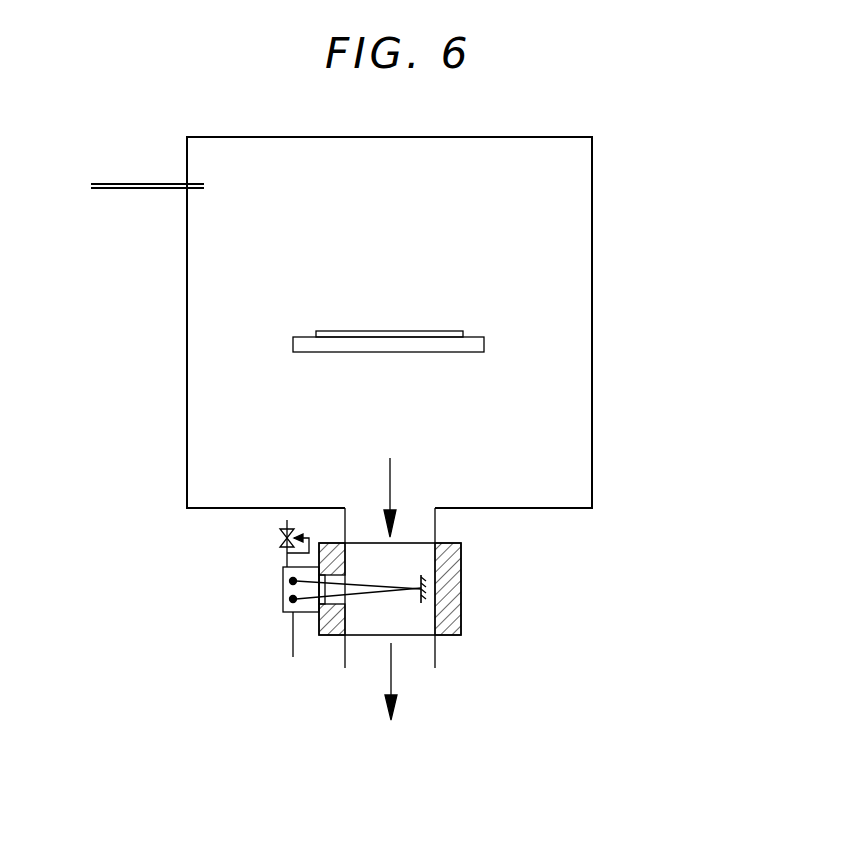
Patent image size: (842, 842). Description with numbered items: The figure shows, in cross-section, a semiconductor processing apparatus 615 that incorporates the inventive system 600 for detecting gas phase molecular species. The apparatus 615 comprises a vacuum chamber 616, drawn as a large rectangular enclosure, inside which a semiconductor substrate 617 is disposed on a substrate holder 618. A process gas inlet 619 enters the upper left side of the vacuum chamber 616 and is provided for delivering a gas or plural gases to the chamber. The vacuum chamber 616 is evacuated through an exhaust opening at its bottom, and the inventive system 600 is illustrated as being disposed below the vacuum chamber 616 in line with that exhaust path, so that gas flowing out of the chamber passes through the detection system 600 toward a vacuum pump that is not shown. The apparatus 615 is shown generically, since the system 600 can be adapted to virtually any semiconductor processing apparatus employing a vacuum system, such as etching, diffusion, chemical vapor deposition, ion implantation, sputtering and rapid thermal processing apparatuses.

The system for detecting gas phase molecular species 600 is at (465, 585).
The semiconductor processing apparatus 615 is at (388, 136).
The vacuum chamber 616 is at (593, 313).
The semiconductor substrate 617 is at (463, 331).
The substrate holder 618 is at (486, 342).
The process gas inlet 619 is at (125, 190).